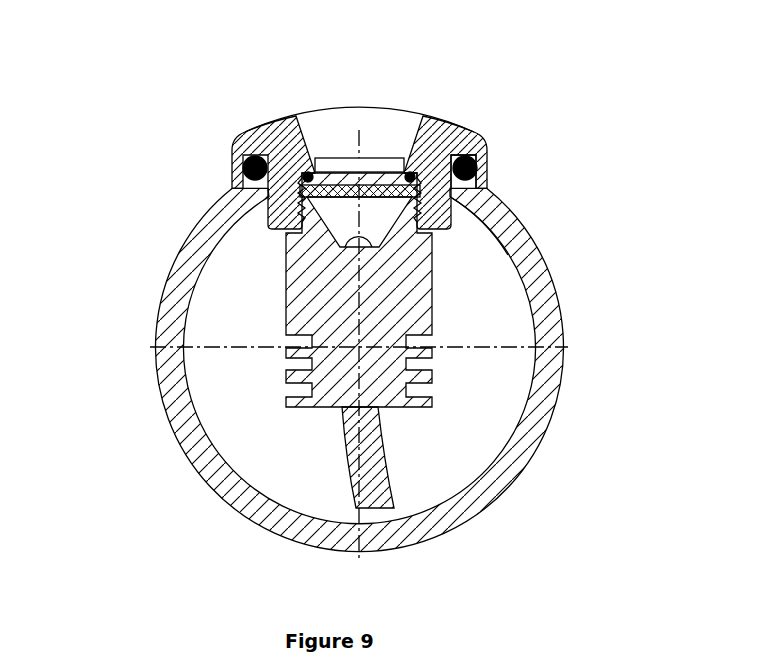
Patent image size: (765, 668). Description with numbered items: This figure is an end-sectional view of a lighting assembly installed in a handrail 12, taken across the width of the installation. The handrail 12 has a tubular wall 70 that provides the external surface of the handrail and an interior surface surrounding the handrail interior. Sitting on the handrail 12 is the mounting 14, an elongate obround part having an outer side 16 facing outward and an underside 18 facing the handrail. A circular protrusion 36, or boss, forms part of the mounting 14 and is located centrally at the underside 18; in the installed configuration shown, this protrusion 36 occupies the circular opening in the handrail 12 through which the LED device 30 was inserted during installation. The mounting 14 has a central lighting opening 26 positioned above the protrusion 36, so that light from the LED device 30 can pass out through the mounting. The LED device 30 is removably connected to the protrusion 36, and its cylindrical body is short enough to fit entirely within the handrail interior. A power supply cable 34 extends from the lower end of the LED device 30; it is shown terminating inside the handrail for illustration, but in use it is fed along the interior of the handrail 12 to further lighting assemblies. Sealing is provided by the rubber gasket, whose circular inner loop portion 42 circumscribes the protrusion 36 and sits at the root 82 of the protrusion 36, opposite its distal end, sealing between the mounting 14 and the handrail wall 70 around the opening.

The handrail 12 is at (409, 389).
The mounting 14 is at (255, 133).
The outer side 16 is at (437, 118).
The underside 18 is at (255, 190).
The central lighting opening 26 is at (330, 112).
The LED device 30 is at (282, 301).
The power supply cable 34 is at (356, 456).
The circular protrusion 36 is at (462, 218).
The inner loop portion 42 is at (478, 167).
The tubular wall 70 is at (553, 319).
The root 82 is at (457, 155).